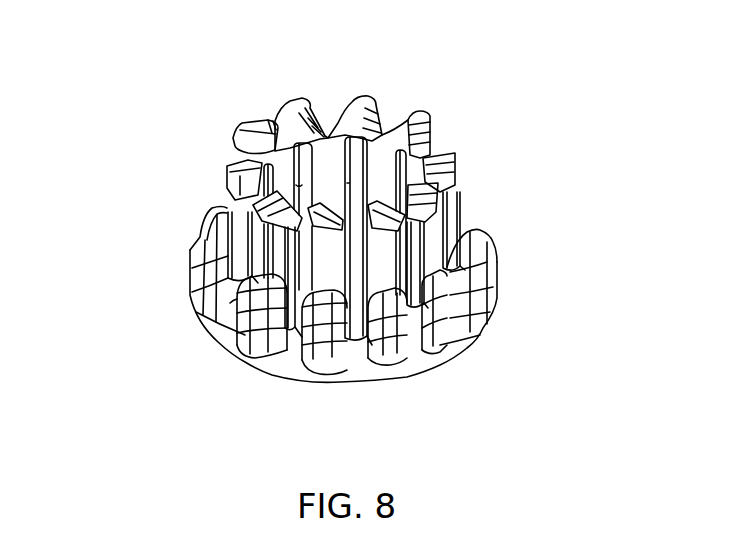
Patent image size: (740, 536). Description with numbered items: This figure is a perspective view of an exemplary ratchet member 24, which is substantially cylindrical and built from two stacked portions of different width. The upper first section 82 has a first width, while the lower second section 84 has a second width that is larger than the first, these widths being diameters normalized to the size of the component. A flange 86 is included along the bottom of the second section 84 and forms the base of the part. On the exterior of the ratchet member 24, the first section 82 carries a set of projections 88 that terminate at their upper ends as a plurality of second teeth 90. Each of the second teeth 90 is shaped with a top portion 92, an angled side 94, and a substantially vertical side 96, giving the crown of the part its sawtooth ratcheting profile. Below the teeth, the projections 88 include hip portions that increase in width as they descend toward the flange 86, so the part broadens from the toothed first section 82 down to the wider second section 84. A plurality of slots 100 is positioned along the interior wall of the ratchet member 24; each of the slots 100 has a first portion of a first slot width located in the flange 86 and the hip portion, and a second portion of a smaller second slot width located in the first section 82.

The ratchet member 24 is at (158, 100).
The first section 82 is at (227, 188).
The second section 84 is at (188, 300).
The flange 86 is at (445, 353).
The projections 88 is at (447, 240).
The second teeth 90 is at (442, 116).
The top portion 92 is at (300, 113).
The angled side 94 is at (280, 122).
The substantially vertical side 96 is at (380, 137).
The slots 100 is at (358, 188).